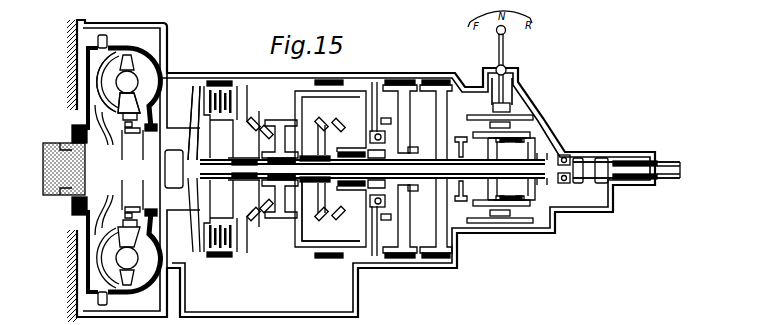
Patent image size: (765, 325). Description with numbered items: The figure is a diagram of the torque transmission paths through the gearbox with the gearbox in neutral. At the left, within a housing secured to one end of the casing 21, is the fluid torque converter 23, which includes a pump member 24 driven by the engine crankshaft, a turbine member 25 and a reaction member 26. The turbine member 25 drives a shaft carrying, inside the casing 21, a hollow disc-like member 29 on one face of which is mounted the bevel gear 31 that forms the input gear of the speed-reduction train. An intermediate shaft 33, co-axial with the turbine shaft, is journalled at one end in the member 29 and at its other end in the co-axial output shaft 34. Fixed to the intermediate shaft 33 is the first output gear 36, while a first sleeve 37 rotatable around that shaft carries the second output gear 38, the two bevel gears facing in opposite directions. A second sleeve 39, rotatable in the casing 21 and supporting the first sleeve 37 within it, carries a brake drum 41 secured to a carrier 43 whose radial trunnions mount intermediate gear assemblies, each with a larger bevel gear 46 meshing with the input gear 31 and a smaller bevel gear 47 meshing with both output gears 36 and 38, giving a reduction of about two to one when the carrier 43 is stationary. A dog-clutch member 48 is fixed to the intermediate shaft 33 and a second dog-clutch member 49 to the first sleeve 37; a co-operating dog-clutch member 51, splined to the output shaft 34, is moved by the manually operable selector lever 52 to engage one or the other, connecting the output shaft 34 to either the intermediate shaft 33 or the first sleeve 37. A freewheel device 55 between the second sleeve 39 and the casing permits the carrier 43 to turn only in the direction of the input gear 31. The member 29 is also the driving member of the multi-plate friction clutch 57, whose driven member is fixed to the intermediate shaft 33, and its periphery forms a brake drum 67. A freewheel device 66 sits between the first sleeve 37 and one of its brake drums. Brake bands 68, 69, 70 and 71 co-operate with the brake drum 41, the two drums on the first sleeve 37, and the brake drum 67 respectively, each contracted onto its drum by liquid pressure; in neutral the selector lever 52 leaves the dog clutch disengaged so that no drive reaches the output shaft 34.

The casing 21 is at (375, 80).
The fluid torque converter 23 is at (75, 106).
The pump member 24 is at (150, 80).
The turbine member 25 is at (110, 78).
The reaction member 26 is at (124, 98).
The hollow disc-like member 29 is at (193, 256).
The bevel gear 31 is at (255, 220).
The intermediate shaft 33 is at (433, 176).
The output shaft 34 is at (592, 160).
The first output gear 36 is at (262, 120).
The first sleeve 37 is at (453, 185).
The second output gear 38 is at (332, 200).
The second sleeve 39 is at (345, 216).
The brake drum 41 is at (303, 245).
The carrier 43 is at (290, 230).
The larger bevel gear 46 is at (338, 122).
The smaller bevel gear 47 is at (321, 121).
The dog-clutch member 48 is at (487, 203).
The second dog-clutch member 49 is at (460, 137).
The co-operating dog-clutch member 51 is at (471, 119).
The manually operable selector lever 52 is at (505, 58).
The freewheel device 55 is at (386, 120).
The multi-plate friction clutch 57 is at (203, 111).
The freewheel device 66 is at (414, 148).
The brake drum 67 is at (237, 88).
The brake band 68 is at (339, 259).
The brake band 69 is at (398, 80).
The brake band 70 is at (439, 80).
The brake band 71 is at (219, 81).